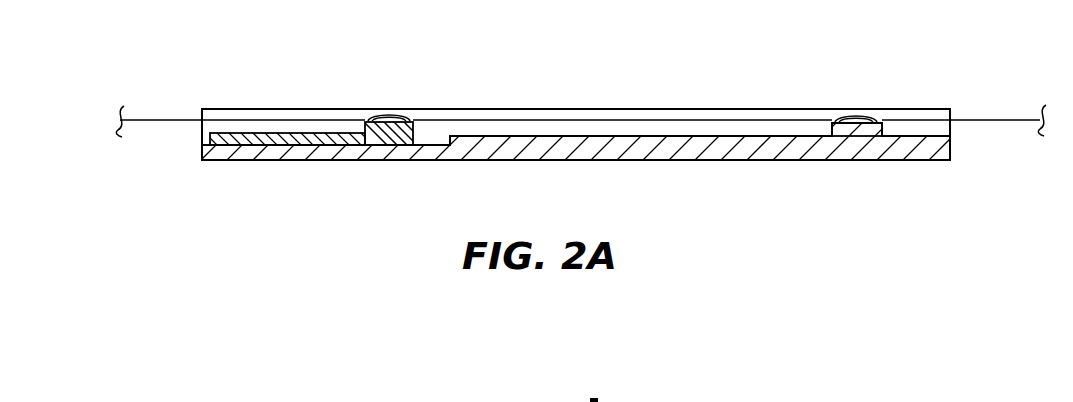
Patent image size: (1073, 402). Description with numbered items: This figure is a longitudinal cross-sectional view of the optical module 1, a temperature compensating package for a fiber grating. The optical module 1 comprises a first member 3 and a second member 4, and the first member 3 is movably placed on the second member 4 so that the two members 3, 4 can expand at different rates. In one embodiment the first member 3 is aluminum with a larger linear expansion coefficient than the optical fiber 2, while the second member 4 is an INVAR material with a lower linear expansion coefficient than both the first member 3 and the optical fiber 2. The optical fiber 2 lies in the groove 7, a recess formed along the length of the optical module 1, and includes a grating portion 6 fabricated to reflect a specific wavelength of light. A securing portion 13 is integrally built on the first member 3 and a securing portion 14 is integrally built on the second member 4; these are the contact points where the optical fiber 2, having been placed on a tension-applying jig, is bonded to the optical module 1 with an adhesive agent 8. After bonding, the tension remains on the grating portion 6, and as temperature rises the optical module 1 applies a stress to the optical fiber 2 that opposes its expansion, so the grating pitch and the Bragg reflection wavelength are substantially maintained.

The optical module 1 is at (826, 194).
The optical fiber 2 is at (158, 119).
The first member 3 is at (282, 145).
The second member 4 is at (602, 160).
The grating portion 6 is at (552, 120).
The groove 7 is at (657, 110).
The adhesive agent 8 is at (400, 114).
The securing portion 13 is at (384, 118).
The securing portion 14 is at (852, 118).